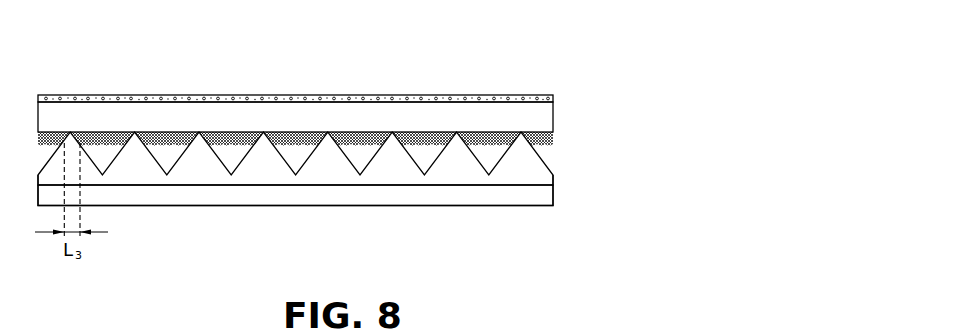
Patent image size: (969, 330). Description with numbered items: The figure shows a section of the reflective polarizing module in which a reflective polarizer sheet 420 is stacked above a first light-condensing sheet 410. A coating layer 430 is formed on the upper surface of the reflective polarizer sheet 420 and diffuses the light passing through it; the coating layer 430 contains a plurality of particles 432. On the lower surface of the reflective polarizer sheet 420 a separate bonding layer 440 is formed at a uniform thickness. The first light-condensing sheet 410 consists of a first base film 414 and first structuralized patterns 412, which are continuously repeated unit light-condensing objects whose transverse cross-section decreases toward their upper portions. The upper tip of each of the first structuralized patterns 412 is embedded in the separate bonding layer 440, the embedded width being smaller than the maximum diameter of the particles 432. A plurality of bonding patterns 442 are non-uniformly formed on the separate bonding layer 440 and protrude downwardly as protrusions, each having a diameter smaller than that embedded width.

The first light-condensing sheet 410 is at (550, 220).
The first structuralized patterns 412 is at (538, 173).
The first base film 414 is at (540, 193).
The reflective polarizer sheet 420 is at (542, 113).
The coating layer 430 is at (543, 95).
The particles 432 is at (452, 96).
The separate bonding layer 440 is at (555, 137).
The bonding patterns 442 is at (500, 137).